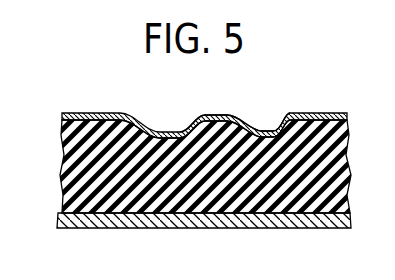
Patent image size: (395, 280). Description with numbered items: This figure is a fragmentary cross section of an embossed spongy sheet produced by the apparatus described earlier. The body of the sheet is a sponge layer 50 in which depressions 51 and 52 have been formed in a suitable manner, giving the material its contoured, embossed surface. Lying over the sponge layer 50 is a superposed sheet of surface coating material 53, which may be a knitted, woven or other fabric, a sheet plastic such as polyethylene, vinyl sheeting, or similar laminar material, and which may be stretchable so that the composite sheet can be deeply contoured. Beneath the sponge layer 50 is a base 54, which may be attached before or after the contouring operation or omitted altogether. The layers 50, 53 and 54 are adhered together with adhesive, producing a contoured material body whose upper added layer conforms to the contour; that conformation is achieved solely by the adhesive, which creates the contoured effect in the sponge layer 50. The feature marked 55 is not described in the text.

The sponge layer 50 is at (186, 168).
The depression 51 is at (276, 124).
The depression 52 is at (165, 131).
The surface coating material 53 is at (103, 113).
The base 54 is at (283, 228).
The ridge of coating surface 55 is at (230, 115).